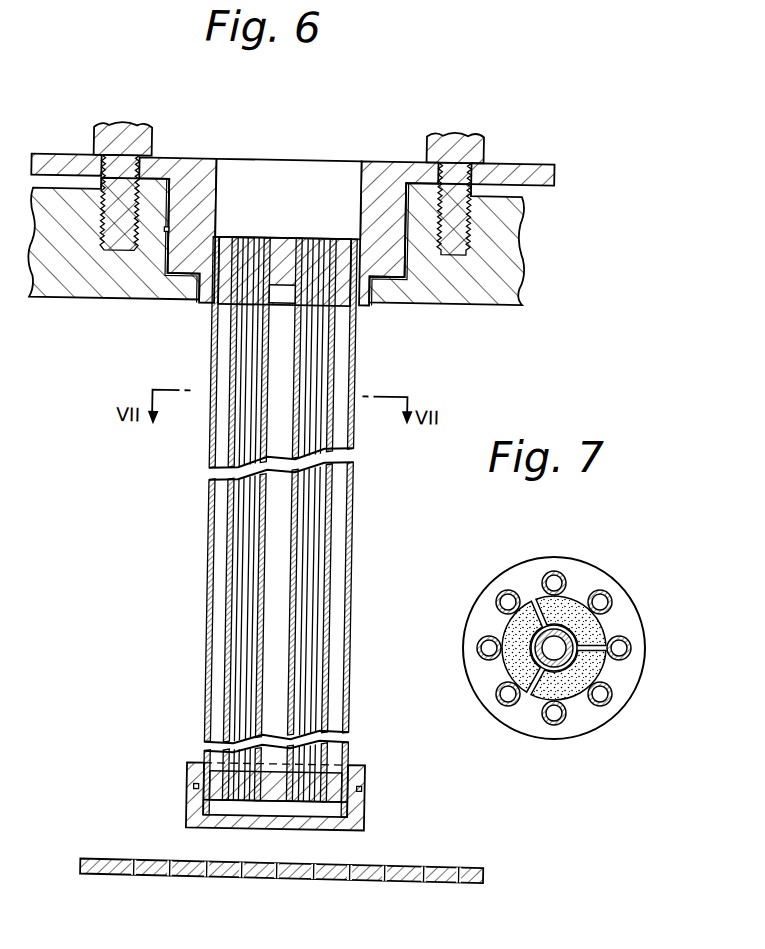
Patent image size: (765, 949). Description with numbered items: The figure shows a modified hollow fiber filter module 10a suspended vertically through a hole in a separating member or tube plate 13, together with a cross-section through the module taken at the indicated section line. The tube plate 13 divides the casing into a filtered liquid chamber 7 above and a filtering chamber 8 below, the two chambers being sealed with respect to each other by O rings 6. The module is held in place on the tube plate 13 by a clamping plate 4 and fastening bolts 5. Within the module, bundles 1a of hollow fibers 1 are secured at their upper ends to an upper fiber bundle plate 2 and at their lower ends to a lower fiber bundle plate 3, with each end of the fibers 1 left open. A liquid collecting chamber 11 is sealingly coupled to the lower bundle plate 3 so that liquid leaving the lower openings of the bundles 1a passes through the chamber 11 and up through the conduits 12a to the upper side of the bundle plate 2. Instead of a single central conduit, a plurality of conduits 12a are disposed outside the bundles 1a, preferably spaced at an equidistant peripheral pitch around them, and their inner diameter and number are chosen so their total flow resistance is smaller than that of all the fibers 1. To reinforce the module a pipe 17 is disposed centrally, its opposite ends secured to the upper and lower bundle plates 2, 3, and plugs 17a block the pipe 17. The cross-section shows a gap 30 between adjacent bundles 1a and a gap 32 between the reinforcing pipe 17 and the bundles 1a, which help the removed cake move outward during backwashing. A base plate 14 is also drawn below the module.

In FIG. 6, the hollow fibers 1 is at (314, 520).
In FIG. 6, the bundle of hollow fibers 1a is at (335, 557).
In FIG. 7, the bundle of hollow fibers 1a is at (575, 640).
In FIG. 6, the upper fiber bundle plate 2 is at (208, 313).
In FIG. 6, the lower fiber bundle plate 3 is at (374, 781).
In FIG. 7, the lower fiber bundle plate 3 is at (607, 560).
In FIG. 6, the clamping plate 4 is at (520, 161).
In FIG. 6, the fastening bolts 5 is at (453, 132).
In FIG. 6, the O rings 6 is at (168, 236).
In FIG. 6, the filtered liquid chamber 7 is at (350, 97).
In FIG. 6, the filtering chamber 8 is at (452, 360).
In FIG. 6, the modified module 10a is at (267, 526).
In FIG. 6, the liquid collecting chamber 11 is at (235, 809).
In FIG. 6, the conduits 12a is at (217, 381).
In FIG. 7, the conduits 12a is at (506, 600).
In FIG. 6, the tube plate 13 is at (501, 302).
In FIG. 6, the base plate 14 is at (416, 858).
In FIG. 6, the pipe 17 is at (269, 353).
In FIG. 7, the pipe 17 is at (520, 665).
In FIG. 6, the plugs 17a is at (290, 248).
In FIG. 7, the gap between adjacent bundles 30 is at (616, 660).
In FIG. 7, the gap between reinforcing pipe and bundles 32 is at (575, 692).